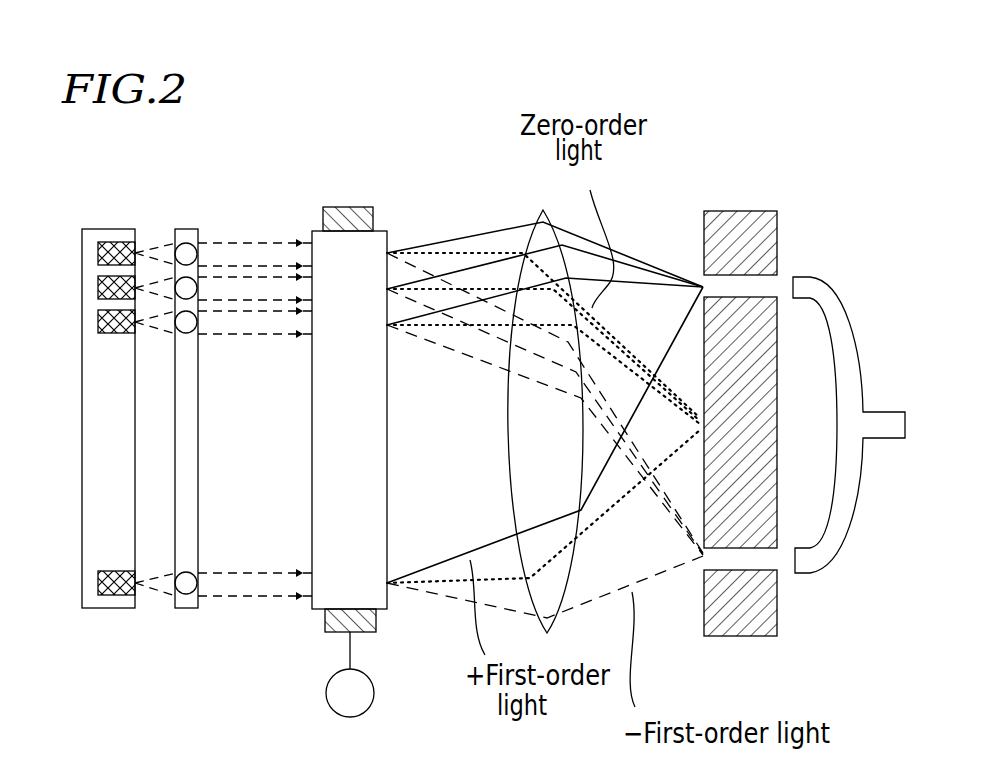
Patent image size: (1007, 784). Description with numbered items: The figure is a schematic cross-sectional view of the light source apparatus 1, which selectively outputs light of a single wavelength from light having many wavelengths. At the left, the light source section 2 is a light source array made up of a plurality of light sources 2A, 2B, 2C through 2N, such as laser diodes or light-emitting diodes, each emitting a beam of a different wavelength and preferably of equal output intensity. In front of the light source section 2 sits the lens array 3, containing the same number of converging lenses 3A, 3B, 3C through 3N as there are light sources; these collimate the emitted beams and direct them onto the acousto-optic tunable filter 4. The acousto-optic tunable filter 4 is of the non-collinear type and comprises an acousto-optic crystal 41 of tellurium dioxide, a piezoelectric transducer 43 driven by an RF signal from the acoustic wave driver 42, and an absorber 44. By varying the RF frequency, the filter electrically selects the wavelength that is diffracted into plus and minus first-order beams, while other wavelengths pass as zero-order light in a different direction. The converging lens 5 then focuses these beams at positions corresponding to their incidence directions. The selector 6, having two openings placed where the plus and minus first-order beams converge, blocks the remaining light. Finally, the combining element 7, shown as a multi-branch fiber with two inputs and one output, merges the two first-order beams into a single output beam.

The light source apparatus 1 is at (190, 710).
The light source section 2 is at (116, 229).
The light source 2A is at (98, 256).
The light source 2B is at (98, 290).
The light source 2C is at (98, 324).
The light source 2N is at (98, 584).
The lens array 3 is at (182, 229).
The converging lens 3A is at (195, 249).
The converging lens 3B is at (195, 284).
The converging lens 3C is at (195, 320).
The converging lens 3N is at (196, 588).
The acousto-optic tunable filter 4 is at (353, 420).
The acousto-optic crystal 41 is at (312, 231).
The acoustic wave driver 42 is at (327, 703).
The piezoelectric transducer 43 is at (320, 610).
The absorber 44 is at (365, 207).
The converging lens 5 is at (543, 211).
The selector 6 is at (735, 211).
The combining element 7 is at (847, 310).